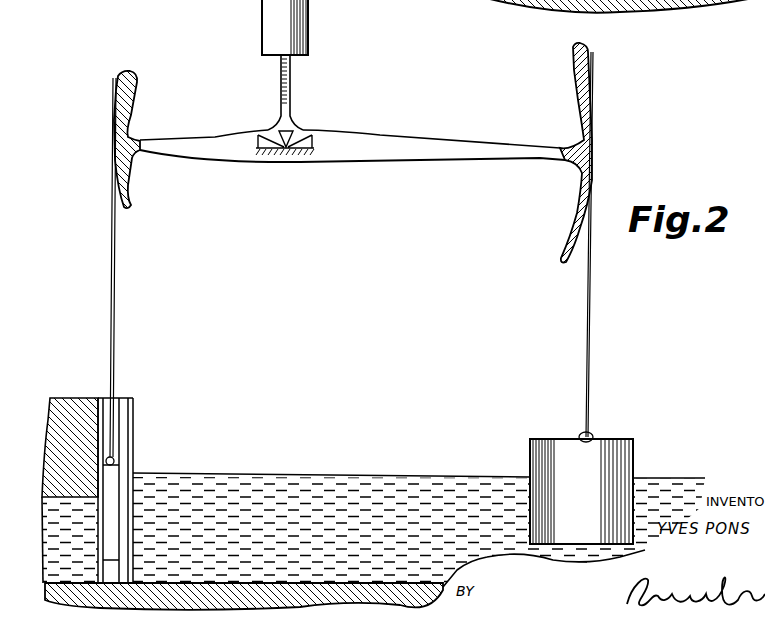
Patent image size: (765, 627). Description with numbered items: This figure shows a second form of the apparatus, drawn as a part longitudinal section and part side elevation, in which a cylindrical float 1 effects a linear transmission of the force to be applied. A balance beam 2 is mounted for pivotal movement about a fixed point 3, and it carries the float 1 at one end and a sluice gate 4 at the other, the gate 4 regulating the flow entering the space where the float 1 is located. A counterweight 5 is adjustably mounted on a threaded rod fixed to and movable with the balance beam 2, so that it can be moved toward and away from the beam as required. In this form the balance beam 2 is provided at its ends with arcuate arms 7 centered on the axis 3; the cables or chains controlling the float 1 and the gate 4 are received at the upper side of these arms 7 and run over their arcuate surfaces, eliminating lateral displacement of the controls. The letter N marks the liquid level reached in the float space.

The float 1 is at (581, 483).
The balance beam 2 is at (418, 153).
The fixed point 3 is at (258, 145).
The sluice gate 4 is at (112, 486).
The counterweight 5 is at (298, 38).
The arcuate arms 7 is at (130, 112).
The liquid level N is at (450, 477).